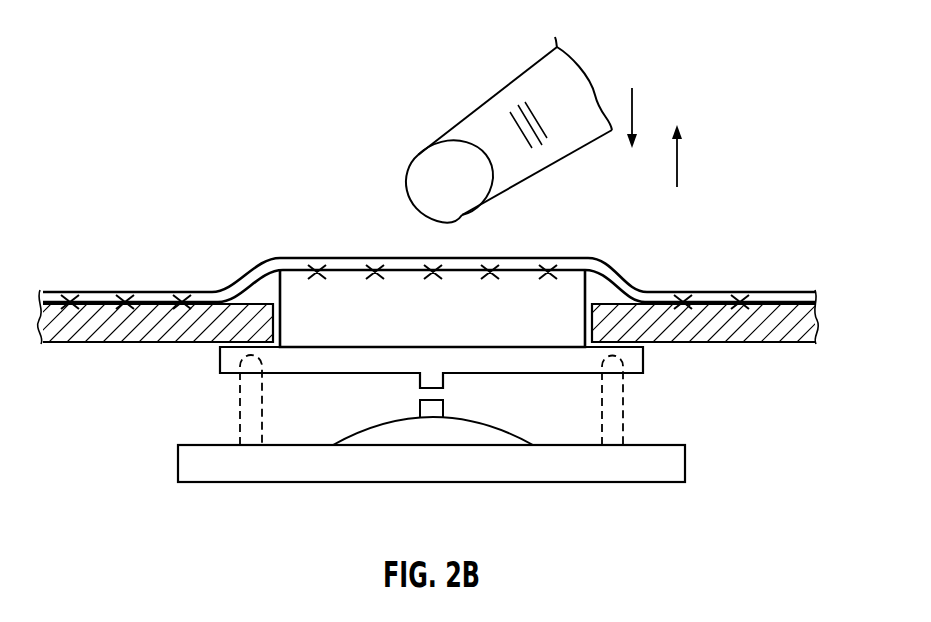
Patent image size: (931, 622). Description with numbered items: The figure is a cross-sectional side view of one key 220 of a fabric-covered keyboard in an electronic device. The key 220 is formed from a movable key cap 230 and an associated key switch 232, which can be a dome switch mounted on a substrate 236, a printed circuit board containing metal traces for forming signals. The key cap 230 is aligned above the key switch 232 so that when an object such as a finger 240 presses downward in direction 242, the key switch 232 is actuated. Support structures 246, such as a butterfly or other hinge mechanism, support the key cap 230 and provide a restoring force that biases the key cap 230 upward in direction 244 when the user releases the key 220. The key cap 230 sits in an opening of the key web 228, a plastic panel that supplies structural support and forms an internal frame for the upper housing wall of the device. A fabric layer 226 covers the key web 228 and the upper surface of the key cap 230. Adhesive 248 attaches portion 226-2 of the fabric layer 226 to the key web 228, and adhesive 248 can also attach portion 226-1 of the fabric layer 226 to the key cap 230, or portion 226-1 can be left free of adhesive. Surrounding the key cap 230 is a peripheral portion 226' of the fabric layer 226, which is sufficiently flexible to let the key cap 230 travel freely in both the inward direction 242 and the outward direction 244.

The key 220 is at (344, 199).
The fabric layer 226 is at (128, 288).
The peripheral portion of fabric layer 226' is at (432, 248).
The portion of fabric layer 226-1 is at (530, 263).
The portion of fabric layer 226-2 is at (795, 293).
The key web 228 is at (97, 338).
The key cap 230 is at (415, 290).
The key switch 232 is at (490, 428).
The substrate 236 is at (638, 465).
The finger 240 is at (505, 88).
The direction 242 is at (632, 113).
The direction 244 is at (677, 160).
The support structures 246 is at (237, 410).
The adhesive 248 is at (182, 298).